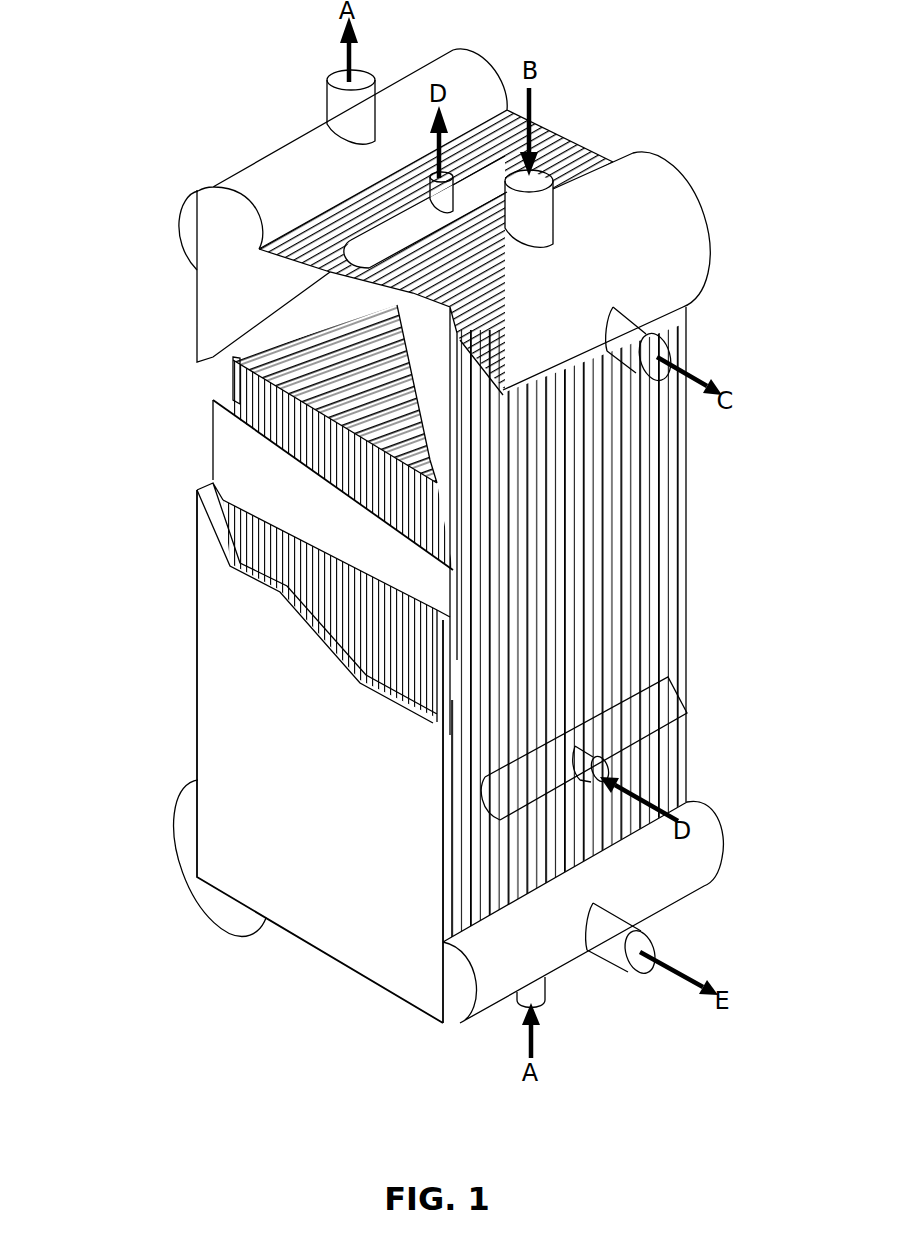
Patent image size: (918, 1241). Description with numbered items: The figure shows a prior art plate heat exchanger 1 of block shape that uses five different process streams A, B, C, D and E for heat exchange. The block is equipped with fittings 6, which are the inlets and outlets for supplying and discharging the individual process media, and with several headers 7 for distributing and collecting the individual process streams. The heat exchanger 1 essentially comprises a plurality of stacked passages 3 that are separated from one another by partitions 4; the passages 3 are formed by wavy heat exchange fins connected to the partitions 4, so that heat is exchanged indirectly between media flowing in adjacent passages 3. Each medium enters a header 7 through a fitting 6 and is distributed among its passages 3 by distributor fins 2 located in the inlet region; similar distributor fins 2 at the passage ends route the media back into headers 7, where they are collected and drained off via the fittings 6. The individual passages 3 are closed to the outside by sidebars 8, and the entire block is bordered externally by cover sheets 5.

The plate heat exchanger 1 is at (425, 566).
The distributor fins 2 is at (253, 363).
The passages 3 is at (247, 427).
The partitions 4 is at (250, 470).
The cover sheets 5 is at (240, 655).
The fittings 6 is at (343, 102).
The headers 7 is at (593, 155).
The sidebars 8 is at (432, 720).